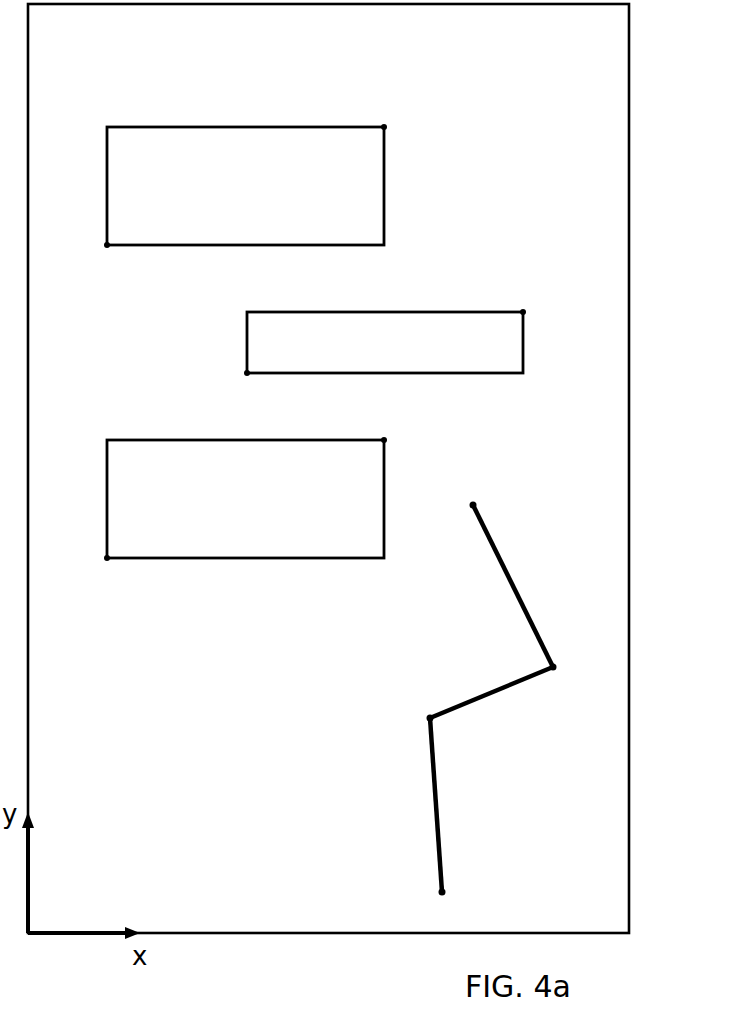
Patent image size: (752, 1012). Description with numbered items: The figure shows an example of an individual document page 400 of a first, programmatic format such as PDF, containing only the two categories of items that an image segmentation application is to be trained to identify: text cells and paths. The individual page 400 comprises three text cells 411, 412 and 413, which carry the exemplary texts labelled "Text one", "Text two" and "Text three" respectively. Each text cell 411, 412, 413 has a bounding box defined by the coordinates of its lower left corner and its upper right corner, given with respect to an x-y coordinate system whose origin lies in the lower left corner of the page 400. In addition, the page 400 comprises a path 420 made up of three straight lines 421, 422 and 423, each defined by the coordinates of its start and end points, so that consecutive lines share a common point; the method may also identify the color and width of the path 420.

The individual document page 400 is at (707, 986).
The text cell 411 is at (195, 150).
The text cell 412 is at (430, 318).
The text cell 413 is at (123, 460).
The path 420 is at (472, 647).
The straight line 421 is at (518, 592).
The straight line 422 is at (470, 705).
The straight line 423 is at (438, 802).